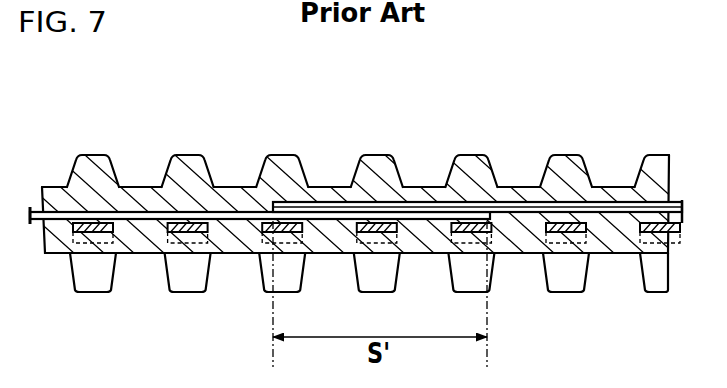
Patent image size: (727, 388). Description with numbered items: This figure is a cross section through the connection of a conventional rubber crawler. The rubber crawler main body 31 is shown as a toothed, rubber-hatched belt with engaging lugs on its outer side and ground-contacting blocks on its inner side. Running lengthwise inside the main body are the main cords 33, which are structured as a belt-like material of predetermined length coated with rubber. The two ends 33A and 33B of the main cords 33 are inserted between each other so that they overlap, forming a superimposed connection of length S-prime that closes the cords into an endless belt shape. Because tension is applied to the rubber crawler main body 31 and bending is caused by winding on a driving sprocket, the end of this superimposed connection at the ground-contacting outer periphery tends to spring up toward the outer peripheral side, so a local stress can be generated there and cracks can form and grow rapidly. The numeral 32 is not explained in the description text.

The rubber crawler main body 31 is at (566, 150).
The core wire / tension member 32 is at (280, 230).
The main cords 33 is at (139, 228).
The end of main cords 33A is at (424, 228).
The end of main cords 33B is at (382, 200).